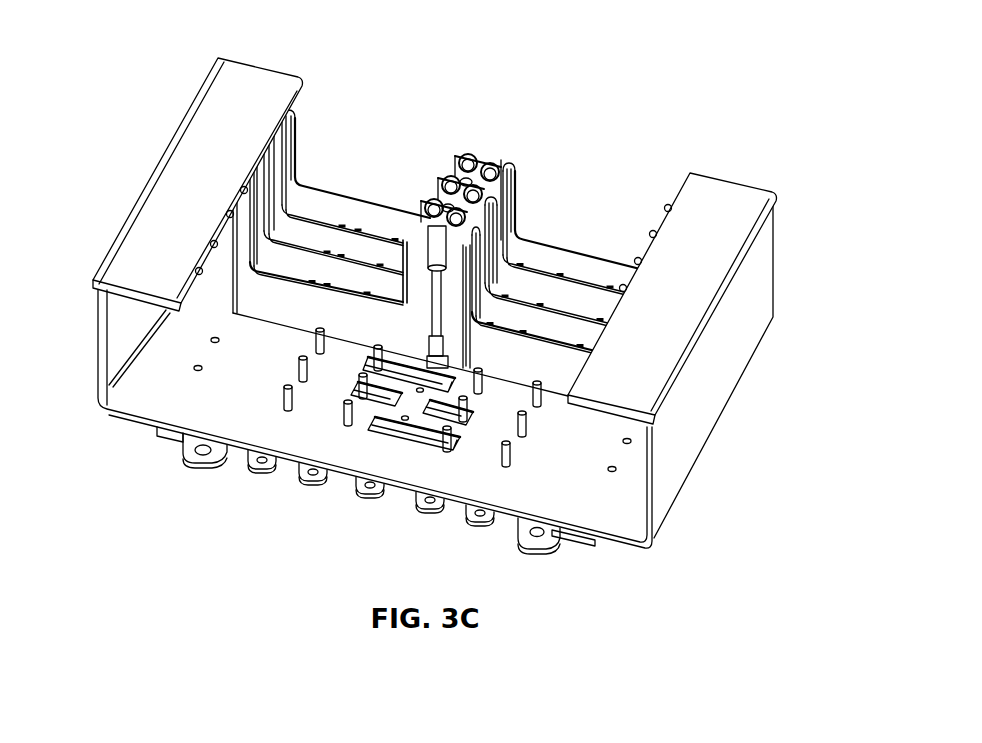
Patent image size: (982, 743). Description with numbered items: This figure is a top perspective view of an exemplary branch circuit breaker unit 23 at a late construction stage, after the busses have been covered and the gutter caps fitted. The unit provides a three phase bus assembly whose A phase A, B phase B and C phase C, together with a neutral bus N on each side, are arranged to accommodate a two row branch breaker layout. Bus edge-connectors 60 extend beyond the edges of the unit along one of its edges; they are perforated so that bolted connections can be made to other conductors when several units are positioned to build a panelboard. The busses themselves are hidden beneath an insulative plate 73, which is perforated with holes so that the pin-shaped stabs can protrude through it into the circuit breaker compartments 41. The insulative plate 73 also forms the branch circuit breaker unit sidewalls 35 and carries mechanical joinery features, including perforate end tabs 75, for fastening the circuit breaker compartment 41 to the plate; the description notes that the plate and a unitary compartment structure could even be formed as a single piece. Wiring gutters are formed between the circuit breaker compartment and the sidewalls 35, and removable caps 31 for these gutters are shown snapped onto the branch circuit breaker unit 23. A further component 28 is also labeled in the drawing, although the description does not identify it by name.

The branch circuit breaker unit 23 is at (463, 308).
The housing base 28 is at (735, 375).
The removable caps 31 is at (257, 78).
The sidewalls 35 is at (757, 278).
The circuit breaker compartments 41 is at (368, 200).
The bus edge-connectors 60 is at (353, 503).
The insulative plate 73 is at (620, 542).
The perforate end tabs 75 is at (187, 462).
The A phase A is at (358, 358).
The B phase B is at (480, 420).
The C phase C is at (462, 449).
The neutral bus N is at (289, 413).